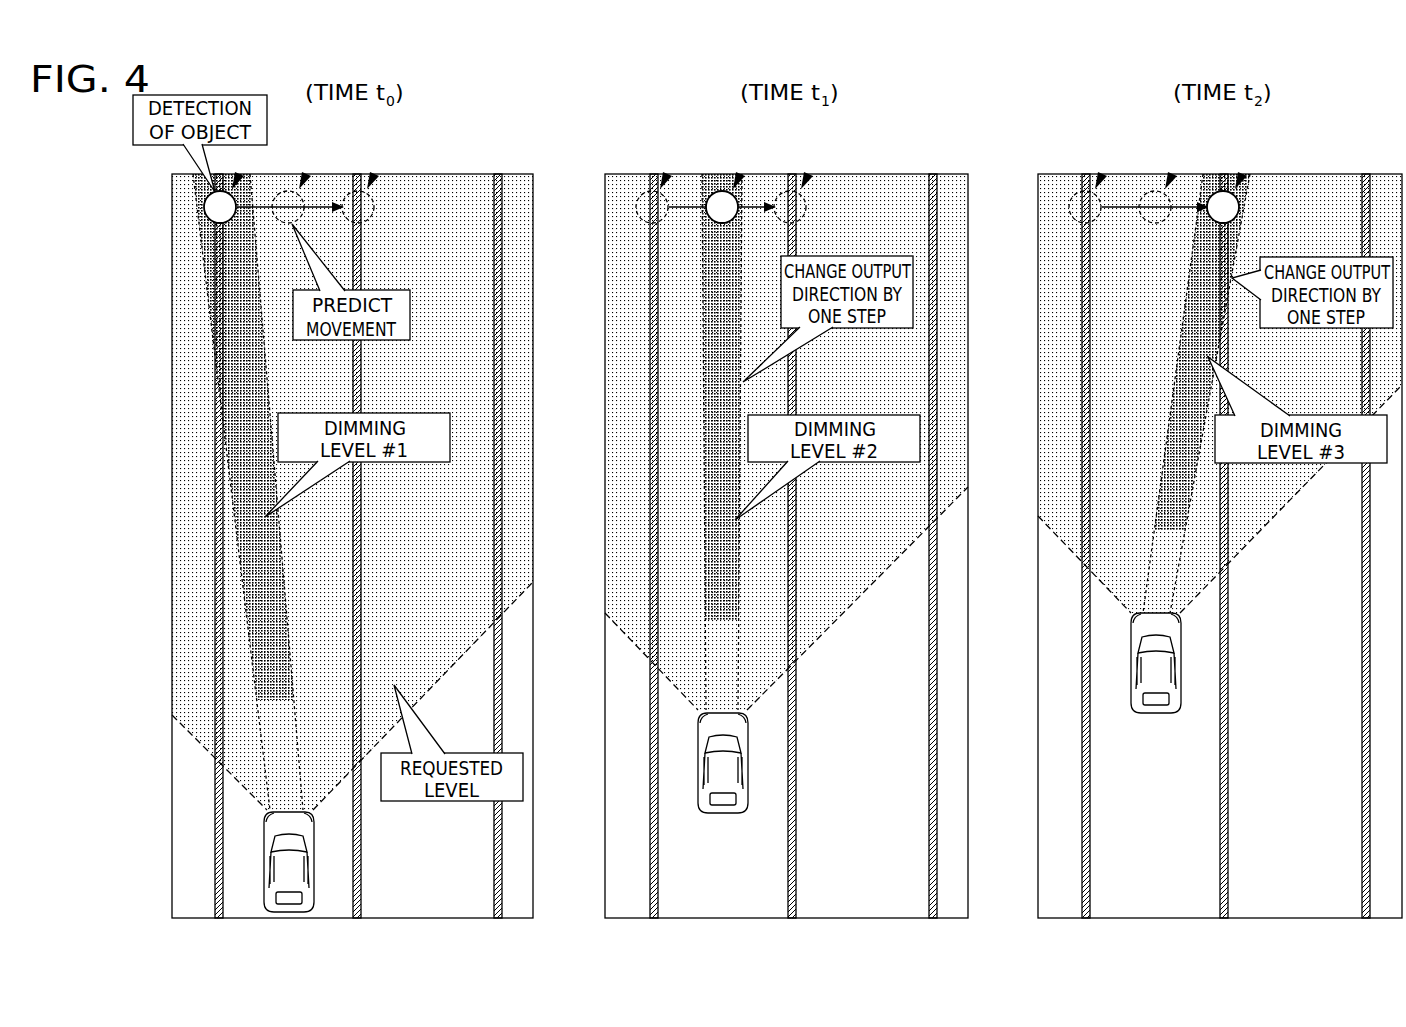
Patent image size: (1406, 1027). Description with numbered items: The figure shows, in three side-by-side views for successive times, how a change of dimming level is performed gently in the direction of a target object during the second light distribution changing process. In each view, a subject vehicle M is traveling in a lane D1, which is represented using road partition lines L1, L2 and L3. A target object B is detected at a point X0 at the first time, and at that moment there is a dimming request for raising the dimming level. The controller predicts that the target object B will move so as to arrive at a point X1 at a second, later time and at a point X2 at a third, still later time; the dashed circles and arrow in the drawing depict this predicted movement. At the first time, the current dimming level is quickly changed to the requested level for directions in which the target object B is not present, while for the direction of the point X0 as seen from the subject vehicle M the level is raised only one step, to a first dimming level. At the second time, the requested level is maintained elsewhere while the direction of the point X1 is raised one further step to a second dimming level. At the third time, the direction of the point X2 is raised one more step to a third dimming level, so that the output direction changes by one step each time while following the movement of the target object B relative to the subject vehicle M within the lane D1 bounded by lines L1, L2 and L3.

The road partition line L1 is at (1085, 937).
The road partition line L2 is at (1223, 937).
The road partition line L3 is at (1365, 937).
The lane D1 is at (349, 925).
The subject vehicle M is at (1155, 735).
The target object B is at (721, 207).
The point X0 is at (1104, 172).
The point X1 is at (1174, 172).
The point X2 is at (1244, 172).